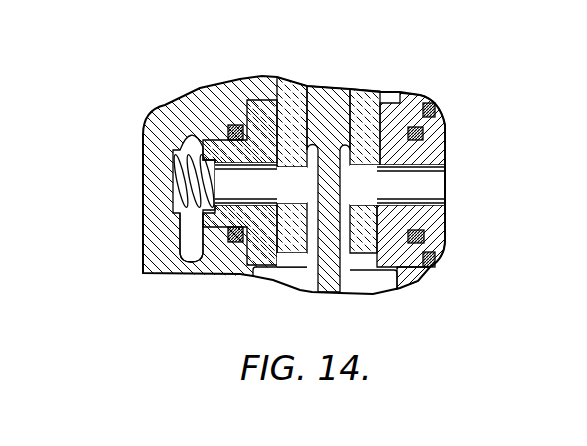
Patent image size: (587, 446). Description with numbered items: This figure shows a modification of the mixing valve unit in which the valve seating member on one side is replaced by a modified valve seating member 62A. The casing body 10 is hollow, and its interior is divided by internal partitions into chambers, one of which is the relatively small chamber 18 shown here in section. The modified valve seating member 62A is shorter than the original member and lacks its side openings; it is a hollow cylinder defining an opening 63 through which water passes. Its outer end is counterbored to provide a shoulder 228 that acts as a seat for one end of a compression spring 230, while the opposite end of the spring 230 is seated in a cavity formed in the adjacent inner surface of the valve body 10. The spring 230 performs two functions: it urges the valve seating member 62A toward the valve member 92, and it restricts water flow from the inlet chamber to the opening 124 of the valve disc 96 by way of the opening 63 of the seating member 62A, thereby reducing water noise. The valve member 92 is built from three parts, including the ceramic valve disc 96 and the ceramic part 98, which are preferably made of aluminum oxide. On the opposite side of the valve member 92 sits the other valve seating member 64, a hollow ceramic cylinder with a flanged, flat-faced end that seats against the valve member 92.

The body 10 is at (146, 124).
The chamber 18 is at (186, 242).
The modified valve seating member 62A is at (257, 115).
The opening 63 is at (264, 196).
The valve seating member 64 is at (433, 152).
The valve member 92 is at (336, 78).
The valve disc 96 is at (290, 95).
The valve member part 98 is at (362, 100).
The opening of valve disc 124 is at (365, 186).
The shoulder 228 is at (212, 228).
The compression spring 230 is at (197, 170).